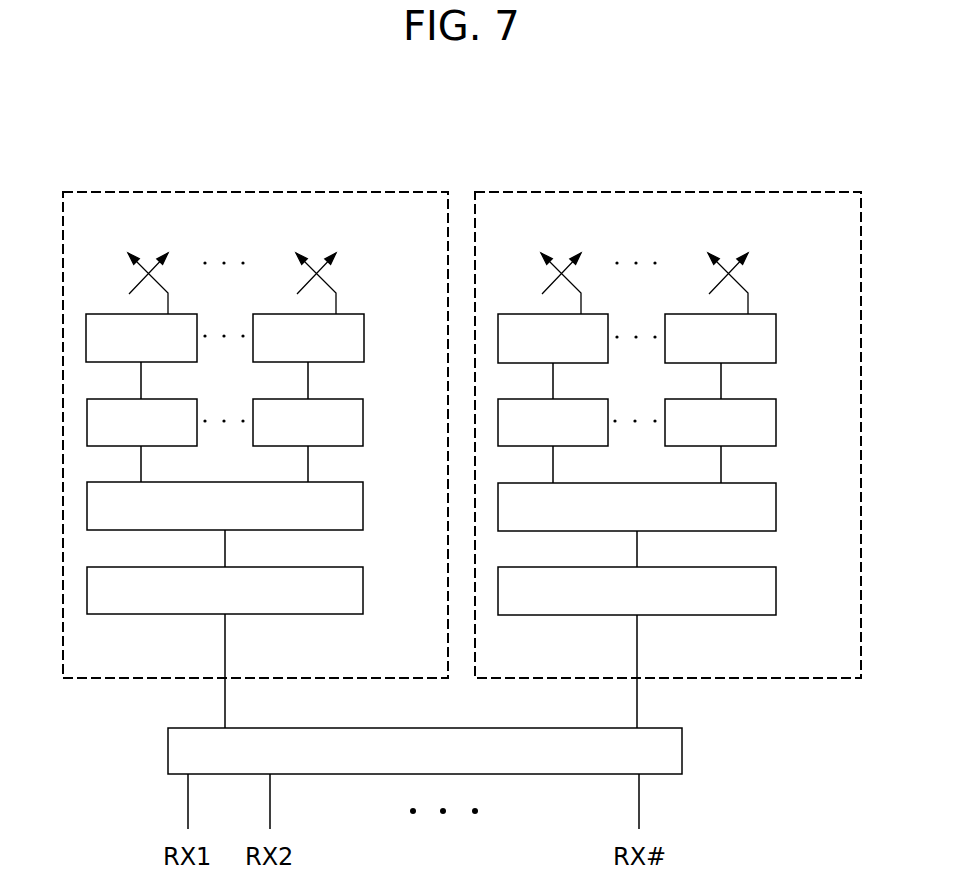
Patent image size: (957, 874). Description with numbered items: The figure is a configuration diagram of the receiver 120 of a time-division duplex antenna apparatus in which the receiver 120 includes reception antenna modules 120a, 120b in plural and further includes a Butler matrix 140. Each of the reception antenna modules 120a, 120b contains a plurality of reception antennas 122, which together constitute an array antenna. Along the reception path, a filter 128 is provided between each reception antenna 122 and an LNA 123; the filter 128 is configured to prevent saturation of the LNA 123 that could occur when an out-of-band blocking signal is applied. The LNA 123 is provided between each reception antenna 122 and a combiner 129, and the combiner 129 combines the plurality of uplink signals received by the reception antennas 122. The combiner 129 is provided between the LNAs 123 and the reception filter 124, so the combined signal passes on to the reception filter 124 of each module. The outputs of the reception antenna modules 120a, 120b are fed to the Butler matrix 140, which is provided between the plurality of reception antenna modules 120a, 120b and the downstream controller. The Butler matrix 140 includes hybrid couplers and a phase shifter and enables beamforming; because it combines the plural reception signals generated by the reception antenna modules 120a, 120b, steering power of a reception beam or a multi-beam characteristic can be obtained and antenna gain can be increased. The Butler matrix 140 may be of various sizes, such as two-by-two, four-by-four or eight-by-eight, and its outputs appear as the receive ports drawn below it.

The receiver 120 is at (478, 134).
The reception antenna module 120a is at (248, 192).
The reception antenna module 120b is at (663, 192).
The reception antenna 122 is at (138, 285).
The filter 128 is at (186, 313).
The LNA 123 is at (365, 422).
The combiner 129 is at (365, 508).
The reception filter 124 is at (365, 590).
The Butler matrix 140 is at (682, 752).